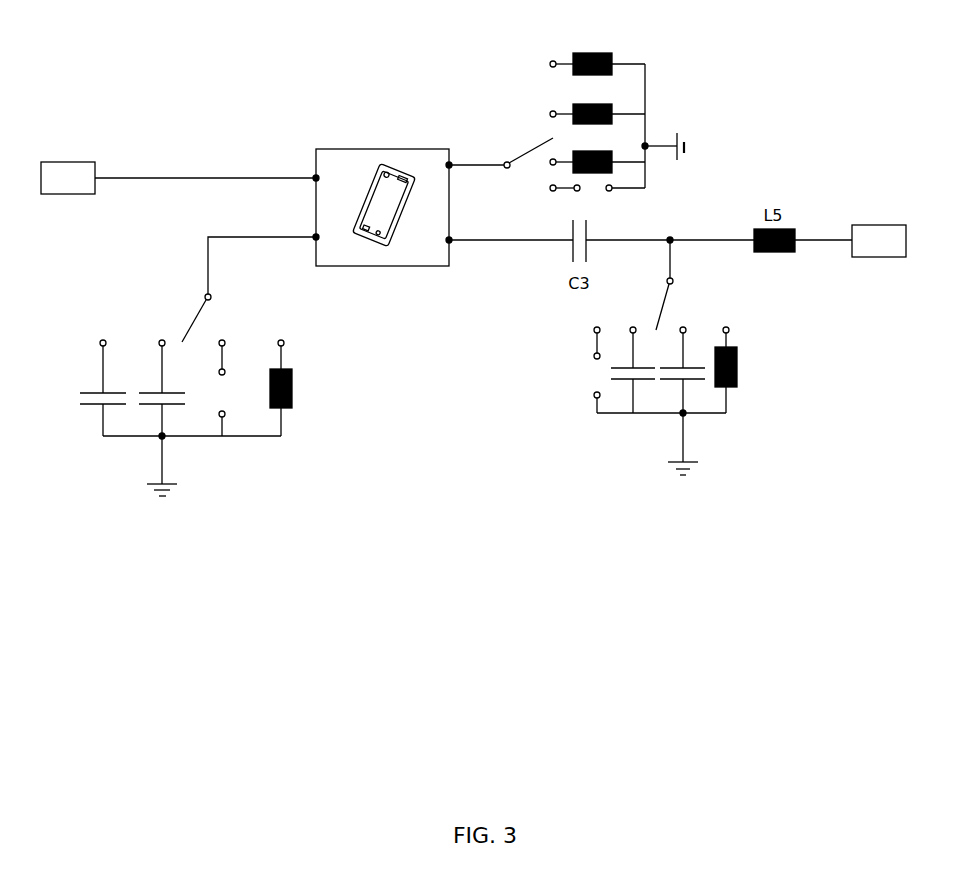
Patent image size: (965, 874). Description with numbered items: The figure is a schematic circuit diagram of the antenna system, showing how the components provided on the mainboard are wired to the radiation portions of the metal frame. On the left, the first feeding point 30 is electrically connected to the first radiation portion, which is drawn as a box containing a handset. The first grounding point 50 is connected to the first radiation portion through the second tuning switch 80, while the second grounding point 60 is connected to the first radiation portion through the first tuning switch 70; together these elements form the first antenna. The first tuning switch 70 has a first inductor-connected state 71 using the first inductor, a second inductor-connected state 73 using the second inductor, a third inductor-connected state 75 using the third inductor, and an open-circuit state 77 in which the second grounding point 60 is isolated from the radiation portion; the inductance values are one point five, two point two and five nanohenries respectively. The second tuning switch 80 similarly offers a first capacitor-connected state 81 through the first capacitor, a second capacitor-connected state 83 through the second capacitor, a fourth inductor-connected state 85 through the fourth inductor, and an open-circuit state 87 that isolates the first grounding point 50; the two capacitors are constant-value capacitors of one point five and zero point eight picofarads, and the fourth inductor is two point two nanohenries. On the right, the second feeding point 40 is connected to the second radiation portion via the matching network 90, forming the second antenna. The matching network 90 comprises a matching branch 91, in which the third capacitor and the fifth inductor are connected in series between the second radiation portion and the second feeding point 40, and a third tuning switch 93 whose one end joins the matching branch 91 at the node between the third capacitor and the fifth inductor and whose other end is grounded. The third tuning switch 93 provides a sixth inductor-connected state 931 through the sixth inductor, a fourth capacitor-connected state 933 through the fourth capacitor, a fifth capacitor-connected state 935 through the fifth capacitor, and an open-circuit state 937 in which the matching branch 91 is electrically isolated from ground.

The first feeding point 30 is at (68, 162).
The second feeding point 40 is at (875, 225).
The first grounding point 50 is at (162, 499).
The second grounding point 60 is at (689, 146).
The first tuning switch 70 is at (581, 119).
The first inductor-connected state 71 is at (630, 64).
The second inductor-connected state 73 is at (628, 114).
The third inductor-connected state 75 is at (627, 162).
The open-circuit state 77 is at (628, 190).
The second tuning switch 80 is at (207, 438).
The first capacitor-connected state 81 is at (103, 367).
The second capacitor-connected state 83 is at (162, 415).
The fourth inductor-connected state 85 is at (282, 420).
The open-circuit state 87 is at (227, 432).
The matching network 90 is at (716, 356).
The matching branch 91 is at (725, 240).
The third tuning switch 93 is at (701, 396).
The sixth inductor-connected state 931 is at (726, 398).
The fourth capacitor-connected state 933 is at (683, 395).
The fifth capacitor-connected state 935 is at (633, 395).
The open-circuit state 937 is at (597, 405).